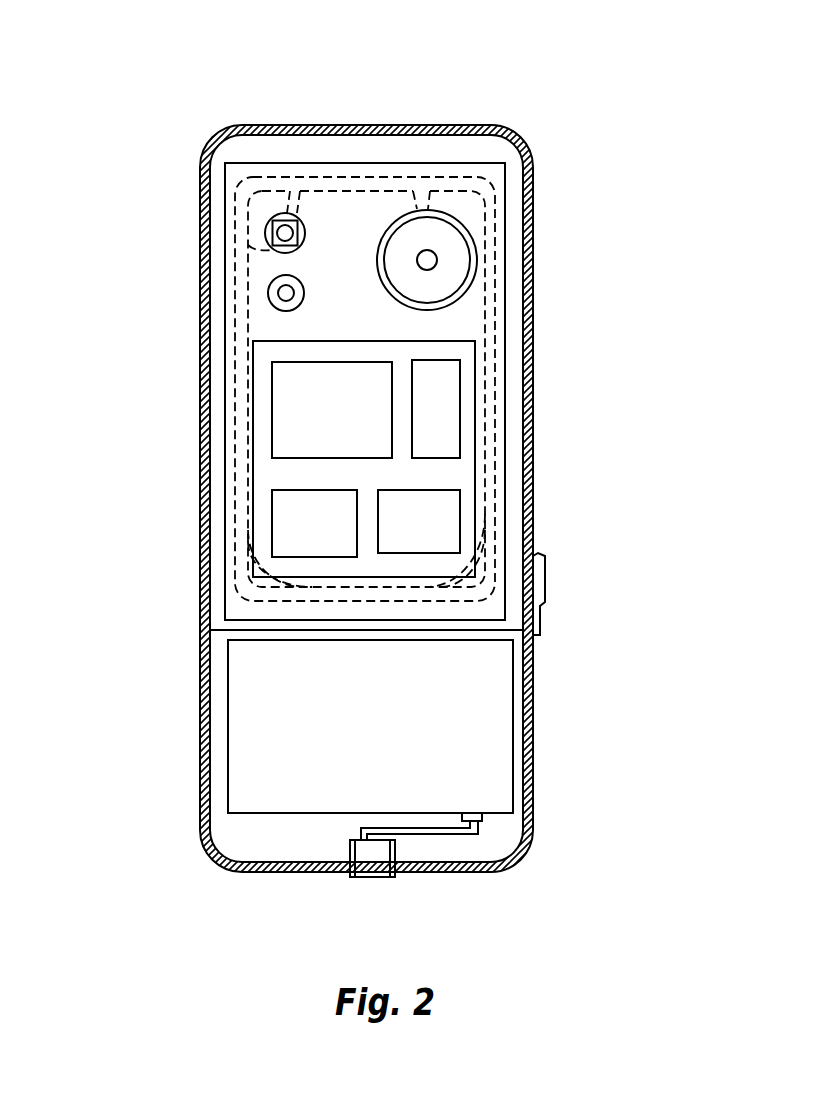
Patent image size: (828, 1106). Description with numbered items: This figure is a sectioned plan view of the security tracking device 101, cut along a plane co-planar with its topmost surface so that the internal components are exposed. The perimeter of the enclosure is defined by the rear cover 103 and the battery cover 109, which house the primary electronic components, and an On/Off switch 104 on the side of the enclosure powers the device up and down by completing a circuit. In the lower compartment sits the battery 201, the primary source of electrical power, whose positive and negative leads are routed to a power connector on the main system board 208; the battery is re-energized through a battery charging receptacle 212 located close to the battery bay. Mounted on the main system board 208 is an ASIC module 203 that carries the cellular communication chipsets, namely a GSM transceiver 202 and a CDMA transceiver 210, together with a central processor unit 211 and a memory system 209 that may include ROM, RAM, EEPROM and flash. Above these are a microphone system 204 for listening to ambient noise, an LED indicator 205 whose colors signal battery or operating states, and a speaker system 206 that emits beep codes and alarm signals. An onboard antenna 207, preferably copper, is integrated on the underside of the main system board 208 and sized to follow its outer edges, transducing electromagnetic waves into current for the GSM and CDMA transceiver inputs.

The security tracking device 101 is at (299, 72).
The rear cover 103 is at (207, 623).
The On/Off switch 104 is at (543, 560).
The battery cover 109 is at (533, 762).
The battery 201 is at (278, 740).
The GSM transceiver 202 is at (297, 517).
The ASIC module 203 is at (243, 432).
The microphone system 204 is at (268, 290).
The LED indicator 205 is at (267, 222).
The speaker system 206 is at (458, 218).
The onboard antenna 207 is at (487, 325).
The main system board 208 is at (507, 380).
The memory system 209 is at (447, 428).
The CDMA transceiver 210 is at (445, 514).
The central processor unit 211 is at (297, 403).
The battery charging receptacle 212 is at (372, 878).